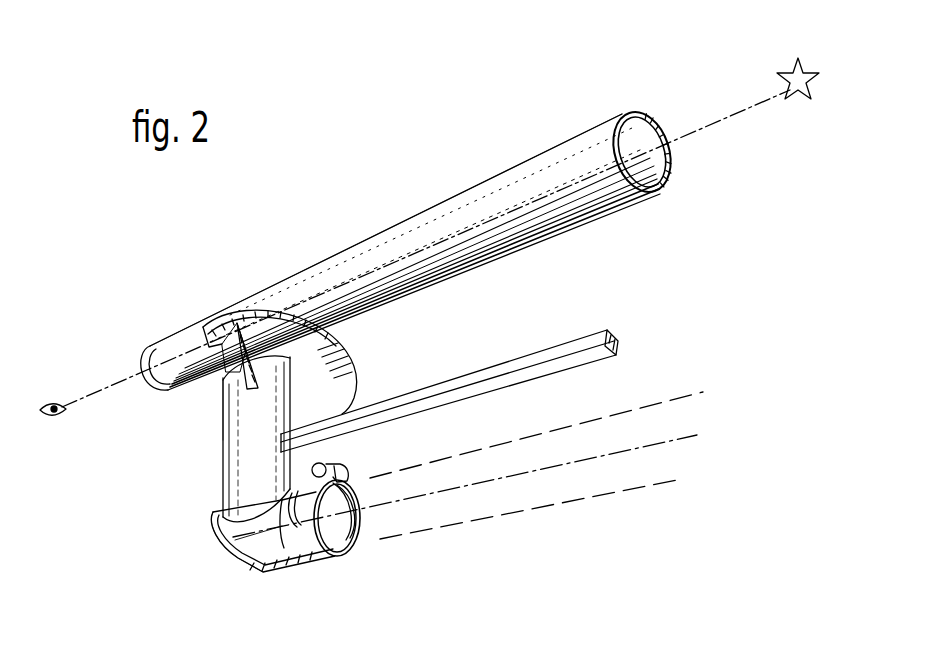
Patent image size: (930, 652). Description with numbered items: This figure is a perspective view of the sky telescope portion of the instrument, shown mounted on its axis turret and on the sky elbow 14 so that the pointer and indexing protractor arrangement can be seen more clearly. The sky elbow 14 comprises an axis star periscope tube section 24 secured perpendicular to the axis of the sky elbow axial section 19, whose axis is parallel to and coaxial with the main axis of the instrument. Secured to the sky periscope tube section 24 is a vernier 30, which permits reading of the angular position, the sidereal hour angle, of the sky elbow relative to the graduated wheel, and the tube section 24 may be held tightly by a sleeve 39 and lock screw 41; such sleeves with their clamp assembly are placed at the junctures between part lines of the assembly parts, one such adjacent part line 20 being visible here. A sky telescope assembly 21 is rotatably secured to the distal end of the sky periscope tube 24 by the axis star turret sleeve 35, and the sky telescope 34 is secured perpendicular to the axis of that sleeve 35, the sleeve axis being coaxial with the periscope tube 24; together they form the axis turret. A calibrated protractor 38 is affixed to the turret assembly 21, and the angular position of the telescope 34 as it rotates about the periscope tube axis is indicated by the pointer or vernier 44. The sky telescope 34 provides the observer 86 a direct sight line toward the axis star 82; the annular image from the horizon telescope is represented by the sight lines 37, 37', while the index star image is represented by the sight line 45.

The sky elbow 14 is at (206, 524).
The sky elbow axial section 19 is at (238, 543).
The part line 20 is at (352, 566).
The sky telescope assembly 21 is at (378, 229).
The axis star periscope tube section 24 is at (240, 442).
The vernier 30 is at (520, 380).
The sky telescope 34 is at (528, 178).
The axis star turret sleeve 35 is at (240, 370).
The sight line 37 is at (529, 551).
The sight line 37' is at (536, 435).
The calibrated protractor 38 is at (223, 324).
The sleeve 39 is at (312, 570).
The lock screw 41 is at (346, 478).
The pointer or vernier 44 is at (223, 388).
The sight line 45 is at (497, 482).
The axis star 82 is at (788, 82).
The observer 86 is at (57, 398).